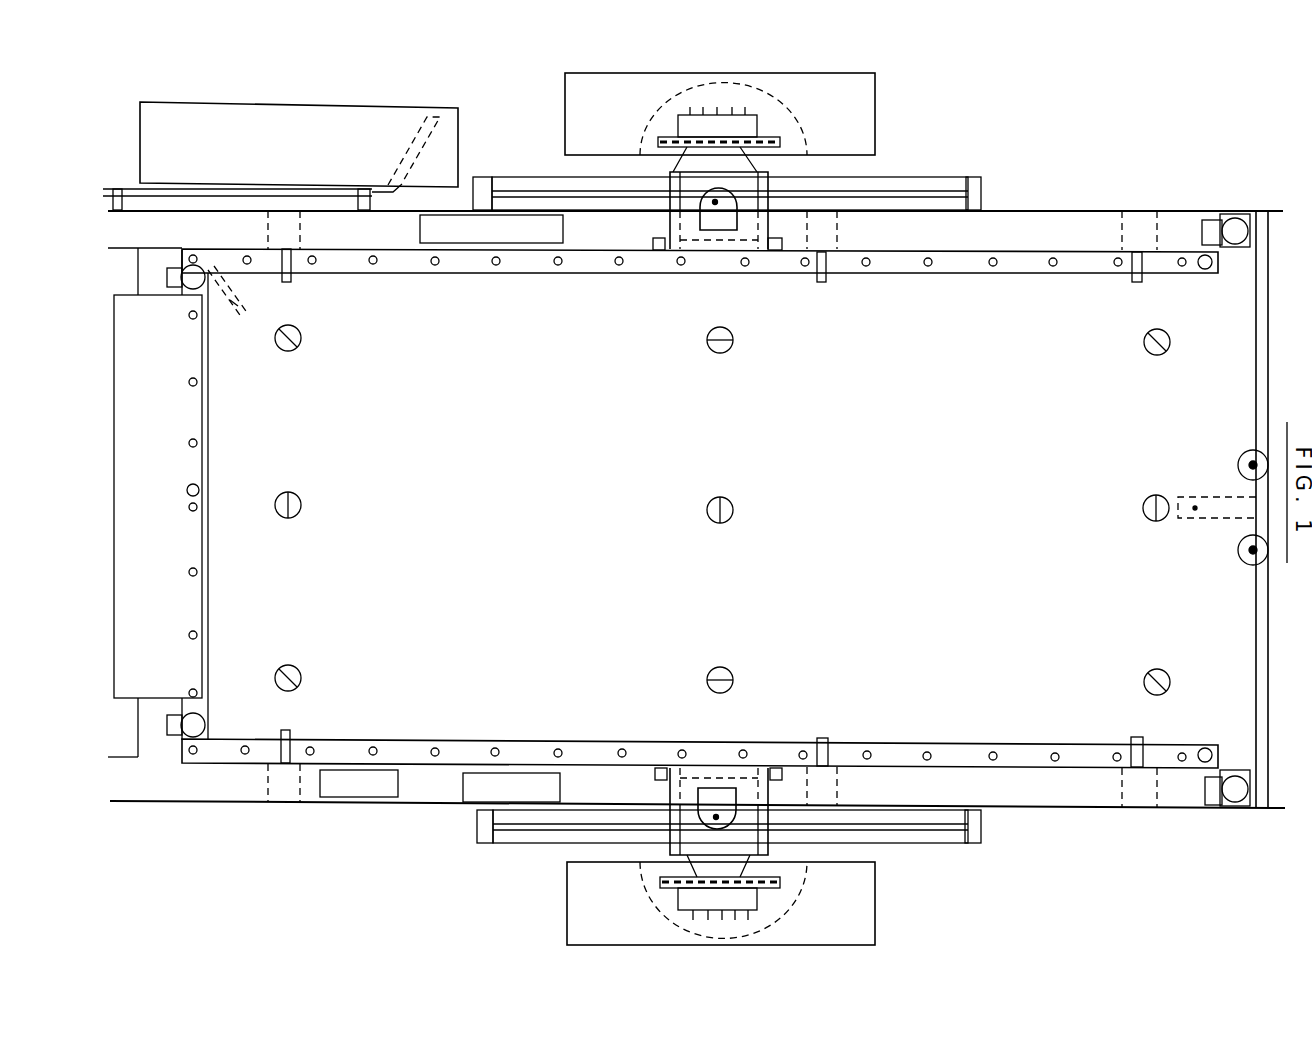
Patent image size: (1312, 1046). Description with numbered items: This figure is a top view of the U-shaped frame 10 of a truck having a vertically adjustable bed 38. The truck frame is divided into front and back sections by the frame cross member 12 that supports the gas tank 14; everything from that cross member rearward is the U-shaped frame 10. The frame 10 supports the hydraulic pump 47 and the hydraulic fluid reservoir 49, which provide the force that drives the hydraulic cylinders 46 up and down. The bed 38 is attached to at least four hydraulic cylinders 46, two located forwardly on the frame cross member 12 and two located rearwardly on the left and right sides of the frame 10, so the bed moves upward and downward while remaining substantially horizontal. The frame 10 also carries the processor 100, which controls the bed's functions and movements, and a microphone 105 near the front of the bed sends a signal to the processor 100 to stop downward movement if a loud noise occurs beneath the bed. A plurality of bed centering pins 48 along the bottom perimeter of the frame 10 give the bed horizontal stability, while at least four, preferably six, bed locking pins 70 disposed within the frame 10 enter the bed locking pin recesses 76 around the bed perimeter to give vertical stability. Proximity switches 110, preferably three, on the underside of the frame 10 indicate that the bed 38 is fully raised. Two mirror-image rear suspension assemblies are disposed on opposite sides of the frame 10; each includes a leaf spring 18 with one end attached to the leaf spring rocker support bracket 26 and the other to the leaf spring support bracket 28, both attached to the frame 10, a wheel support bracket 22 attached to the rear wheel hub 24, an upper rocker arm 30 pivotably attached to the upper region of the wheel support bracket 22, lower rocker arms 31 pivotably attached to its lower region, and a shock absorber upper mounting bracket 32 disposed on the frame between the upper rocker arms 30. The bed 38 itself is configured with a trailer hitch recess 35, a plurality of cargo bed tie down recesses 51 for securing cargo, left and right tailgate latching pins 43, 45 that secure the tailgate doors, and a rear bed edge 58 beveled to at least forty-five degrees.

The U-shaped frame 10 is at (1038, 255).
The frame cross member 12 is at (133, 733).
The gas tank 14 is at (112, 408).
The leaf spring 18 is at (893, 176).
The wheel support bracket 22 is at (682, 158).
The rear wheel hub 24 is at (768, 127).
The leaf spring rocker support bracket 26 is at (975, 176).
The leaf spring support bracket 28 is at (487, 176).
The upper rocker arm 30 is at (662, 193).
The lower rocker arm 31 is at (243, 303).
The shock absorber upper mounting bracket 32 is at (710, 238).
The trailer hitch recess 35 is at (1182, 522).
The vertically adjustable bed 38 is at (287, 597).
The left tailgate latching pin 43 is at (1233, 463).
The right tailgate latching pin 45 is at (1233, 551).
The hydraulic cylinder 46 is at (178, 263).
The hydraulic pump 47 is at (460, 792).
The bed centering pin 48 is at (682, 268).
The hydraulic fluid reservoir 49 is at (357, 803).
The cargo bed tie down recess 51 is at (717, 657).
The rear bed edge 58 is at (1250, 390).
The bed locking pin 70 is at (304, 222).
The bed locking pin recess 76 is at (291, 282).
The processor 100 is at (487, 249).
The microphone 105 is at (235, 325).
The proximity switch 110 is at (1202, 282).